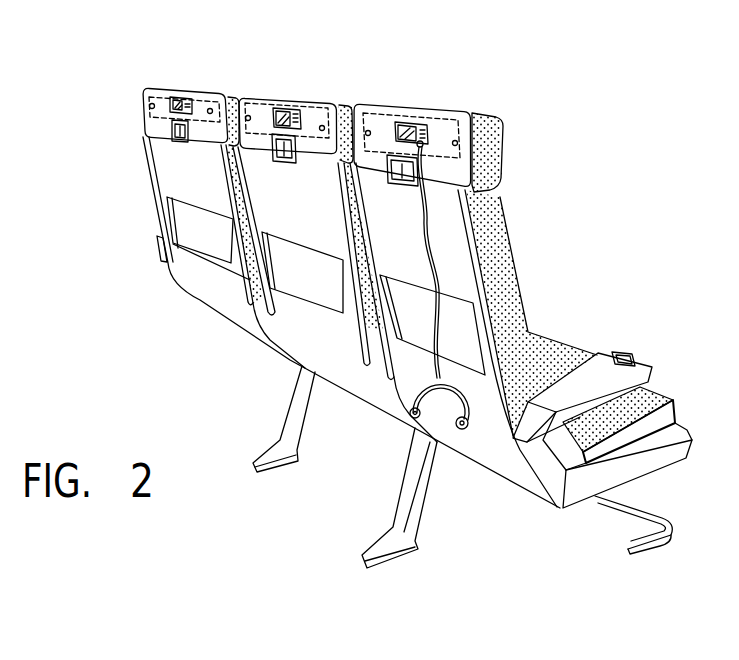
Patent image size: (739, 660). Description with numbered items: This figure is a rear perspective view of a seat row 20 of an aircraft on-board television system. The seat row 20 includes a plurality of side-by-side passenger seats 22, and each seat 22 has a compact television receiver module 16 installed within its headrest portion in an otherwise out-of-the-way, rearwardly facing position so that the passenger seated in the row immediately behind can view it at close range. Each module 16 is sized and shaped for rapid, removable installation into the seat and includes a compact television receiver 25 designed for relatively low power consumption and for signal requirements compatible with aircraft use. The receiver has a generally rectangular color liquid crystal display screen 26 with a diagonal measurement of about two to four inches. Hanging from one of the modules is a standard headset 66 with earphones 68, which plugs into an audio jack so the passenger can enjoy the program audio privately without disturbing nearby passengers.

The seat row 20 is at (588, 525).
The passenger seat 22 is at (207, 290).
The television receiver module 16 is at (163, 100).
The television receiver 25 is at (296, 107).
The liquid crystal display screen 26 is at (283, 106).
The headset 66 is at (452, 380).
The earphones 68 is at (413, 426).